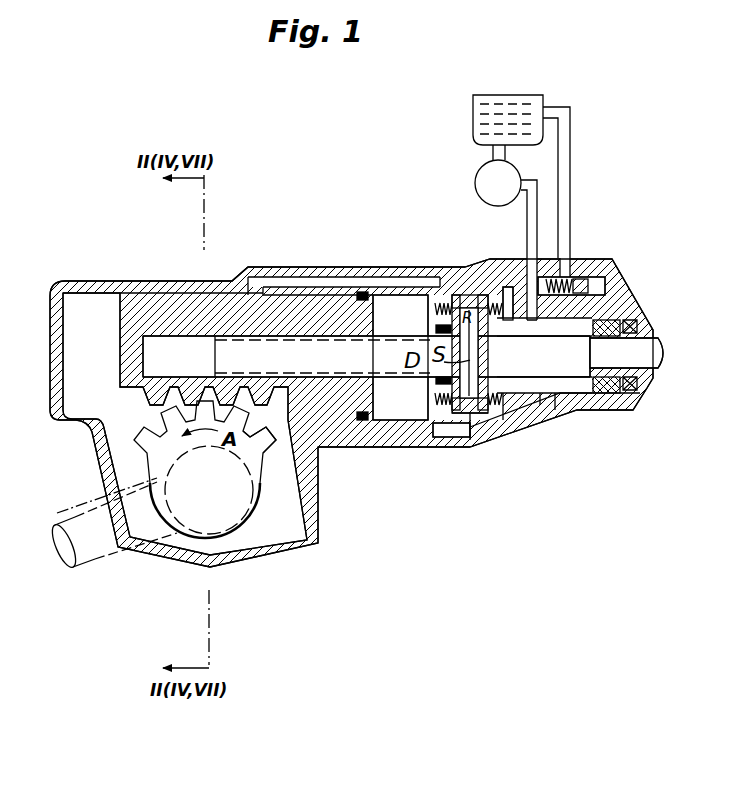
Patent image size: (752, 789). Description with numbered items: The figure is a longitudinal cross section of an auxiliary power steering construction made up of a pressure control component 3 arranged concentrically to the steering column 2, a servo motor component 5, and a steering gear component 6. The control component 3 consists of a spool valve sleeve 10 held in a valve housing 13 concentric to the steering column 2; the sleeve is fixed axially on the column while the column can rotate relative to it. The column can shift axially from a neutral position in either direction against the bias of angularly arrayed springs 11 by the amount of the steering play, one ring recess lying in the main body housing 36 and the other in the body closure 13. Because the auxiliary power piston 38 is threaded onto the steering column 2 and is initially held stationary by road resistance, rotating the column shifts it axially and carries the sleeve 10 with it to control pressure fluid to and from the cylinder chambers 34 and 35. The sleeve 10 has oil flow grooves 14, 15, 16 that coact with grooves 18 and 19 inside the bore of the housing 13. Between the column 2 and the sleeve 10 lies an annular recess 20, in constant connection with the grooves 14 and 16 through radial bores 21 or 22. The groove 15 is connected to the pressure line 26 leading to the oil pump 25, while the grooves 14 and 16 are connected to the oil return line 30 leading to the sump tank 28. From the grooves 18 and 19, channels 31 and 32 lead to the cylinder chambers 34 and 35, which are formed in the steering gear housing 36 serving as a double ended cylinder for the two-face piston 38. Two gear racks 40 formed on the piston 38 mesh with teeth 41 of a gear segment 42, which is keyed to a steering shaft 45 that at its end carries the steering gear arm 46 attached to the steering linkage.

The steering column 2 is at (659, 340).
The pressure control component 3 is at (603, 254).
The servo motor component 5 is at (312, 262).
The steering gear component 6 is at (172, 273).
The spool valve sleeve 10 is at (528, 406).
The springs 11 is at (523, 287).
The valve housing 13 is at (478, 440).
The oil flow groove 14 is at (506, 296).
The annular groove 15 is at (512, 418).
The oil flow groove 16 is at (578, 398).
The annular groove 18 is at (526, 275).
The annular groove 19 is at (542, 404).
The annular recess 20 is at (556, 410).
The radial bore 21 is at (500, 443).
The radial bore 22 is at (597, 400).
The oil pump 25 is at (478, 189).
The pressure line 26 is at (532, 212).
The sump tank 28 is at (474, 130).
The oil return line 30 is at (565, 162).
The channel 31 is at (343, 286).
The channel 32 is at (445, 440).
The cylinder chamber 34 is at (395, 440).
The cylinder chamber 35 is at (83, 305).
The steering gear housing 36 is at (210, 284).
The auxiliary power piston 38 is at (362, 425).
The gear racks 40 is at (140, 392).
The teeth 41 is at (275, 442).
The gear segment 42 is at (263, 462).
The steering shaft 45 is at (240, 514).
The steering gear arm 46 is at (98, 550).